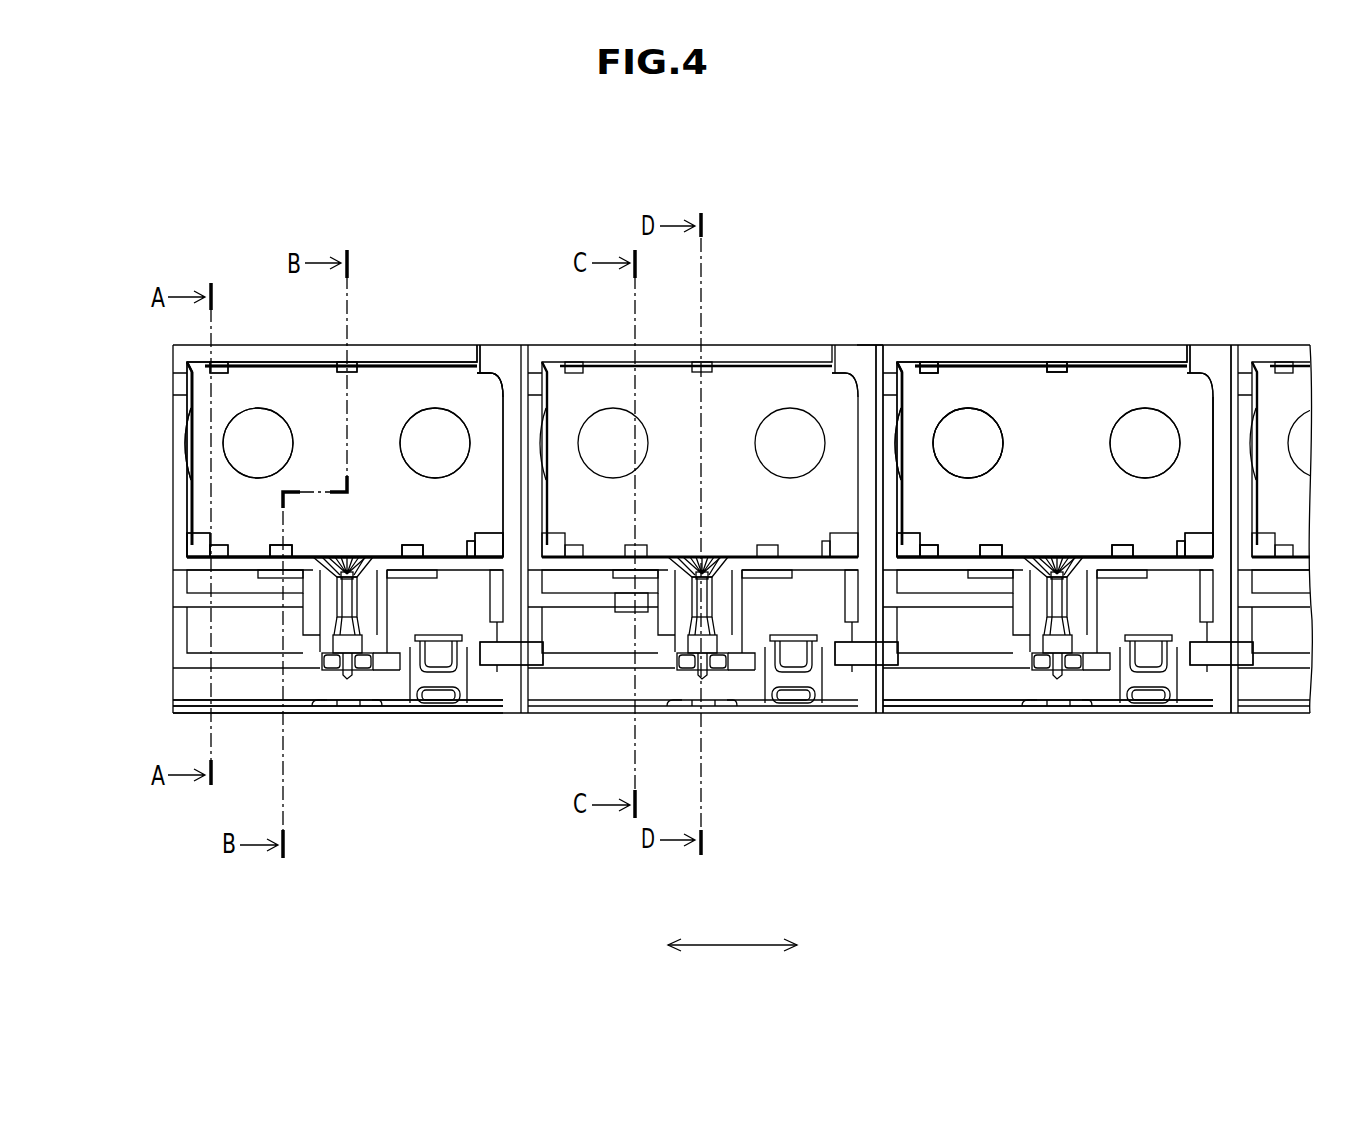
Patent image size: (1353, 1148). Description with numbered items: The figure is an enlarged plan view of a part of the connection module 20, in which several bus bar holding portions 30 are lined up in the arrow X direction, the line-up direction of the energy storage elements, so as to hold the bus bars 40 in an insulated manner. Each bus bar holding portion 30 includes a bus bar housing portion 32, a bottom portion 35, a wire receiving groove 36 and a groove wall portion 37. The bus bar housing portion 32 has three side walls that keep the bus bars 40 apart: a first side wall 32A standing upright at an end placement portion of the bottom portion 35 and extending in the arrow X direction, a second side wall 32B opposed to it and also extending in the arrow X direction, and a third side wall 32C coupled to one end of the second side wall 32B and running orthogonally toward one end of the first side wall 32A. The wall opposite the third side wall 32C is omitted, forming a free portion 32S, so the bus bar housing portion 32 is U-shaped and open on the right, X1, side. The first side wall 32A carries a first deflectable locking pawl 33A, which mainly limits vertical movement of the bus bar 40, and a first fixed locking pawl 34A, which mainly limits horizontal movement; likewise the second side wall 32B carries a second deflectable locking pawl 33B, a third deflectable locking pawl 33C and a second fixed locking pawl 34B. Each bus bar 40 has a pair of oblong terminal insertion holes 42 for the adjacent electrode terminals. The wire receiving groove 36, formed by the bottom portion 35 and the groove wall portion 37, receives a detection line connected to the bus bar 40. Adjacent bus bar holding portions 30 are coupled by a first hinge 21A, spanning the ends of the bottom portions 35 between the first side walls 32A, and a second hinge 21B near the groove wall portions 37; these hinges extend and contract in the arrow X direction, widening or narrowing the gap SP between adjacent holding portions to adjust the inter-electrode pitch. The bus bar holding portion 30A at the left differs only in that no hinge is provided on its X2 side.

The connection module 20 is at (797, 197).
The bus bar holding portion 30 is at (733, 322).
The bus bar holding portion 30A is at (258, 312).
The bus bar housing portion 32 is at (156, 391).
The first side wall 32A is at (412, 347).
The second side wall 32B is at (293, 562).
The third side wall 32C is at (180, 515).
The free portion 32S is at (496, 438).
The bottom portion 35 is at (487, 690).
The wire receiving groove 36 is at (178, 694).
The groove wall portion 37 is at (1003, 710).
The bus bar 40 is at (1007, 387).
The terminal insertion hole 42 is at (958, 415).
The first hinge 21A is at (862, 350).
The second hinge 21B is at (850, 660).
The first deflectable locking pawl 33A is at (1057, 360).
The second deflectable locking pawl 33B is at (990, 560).
The third deflectable locking pawl 33C is at (1120, 560).
The first fixed locking pawl 34A is at (927, 352).
The second fixed locking pawl 34B is at (930, 560).
The gap SP is at (1228, 422).
The arrow X direction X is at (733, 944).
The X1 direction X1 is at (805, 943).
The X2 direction X2 is at (660, 943).